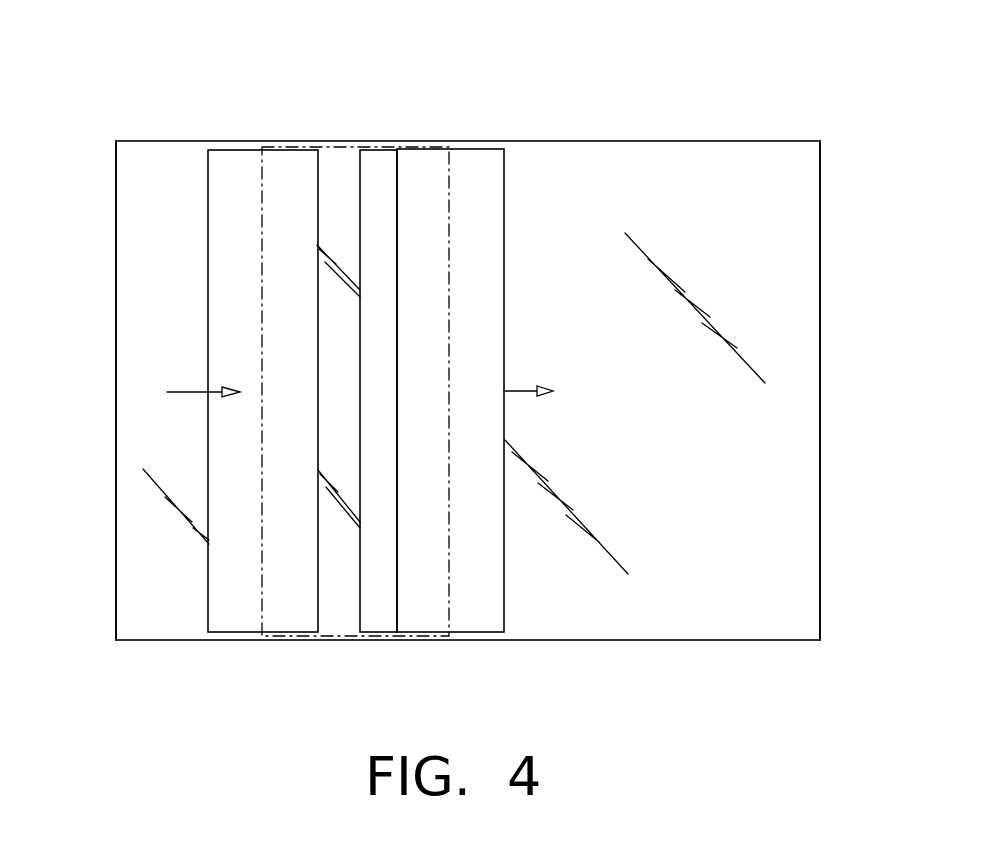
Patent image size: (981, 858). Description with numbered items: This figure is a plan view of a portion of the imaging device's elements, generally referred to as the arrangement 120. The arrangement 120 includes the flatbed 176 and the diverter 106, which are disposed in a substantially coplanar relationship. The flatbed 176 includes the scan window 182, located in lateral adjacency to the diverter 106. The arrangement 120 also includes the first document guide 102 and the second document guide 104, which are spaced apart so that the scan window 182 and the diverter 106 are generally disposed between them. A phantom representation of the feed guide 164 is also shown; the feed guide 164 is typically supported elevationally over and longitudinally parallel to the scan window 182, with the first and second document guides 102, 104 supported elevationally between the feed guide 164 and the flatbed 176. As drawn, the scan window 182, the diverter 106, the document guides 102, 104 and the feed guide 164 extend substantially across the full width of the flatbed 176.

The arrangement 120 is at (650, 123).
The flatbed 176 is at (122, 191).
The first document guide 102 is at (216, 277).
The second document guide 104 is at (504, 283).
The diverter 106 is at (378, 158).
The feed guide 164 is at (449, 188).
The scan window 182 is at (333, 180).